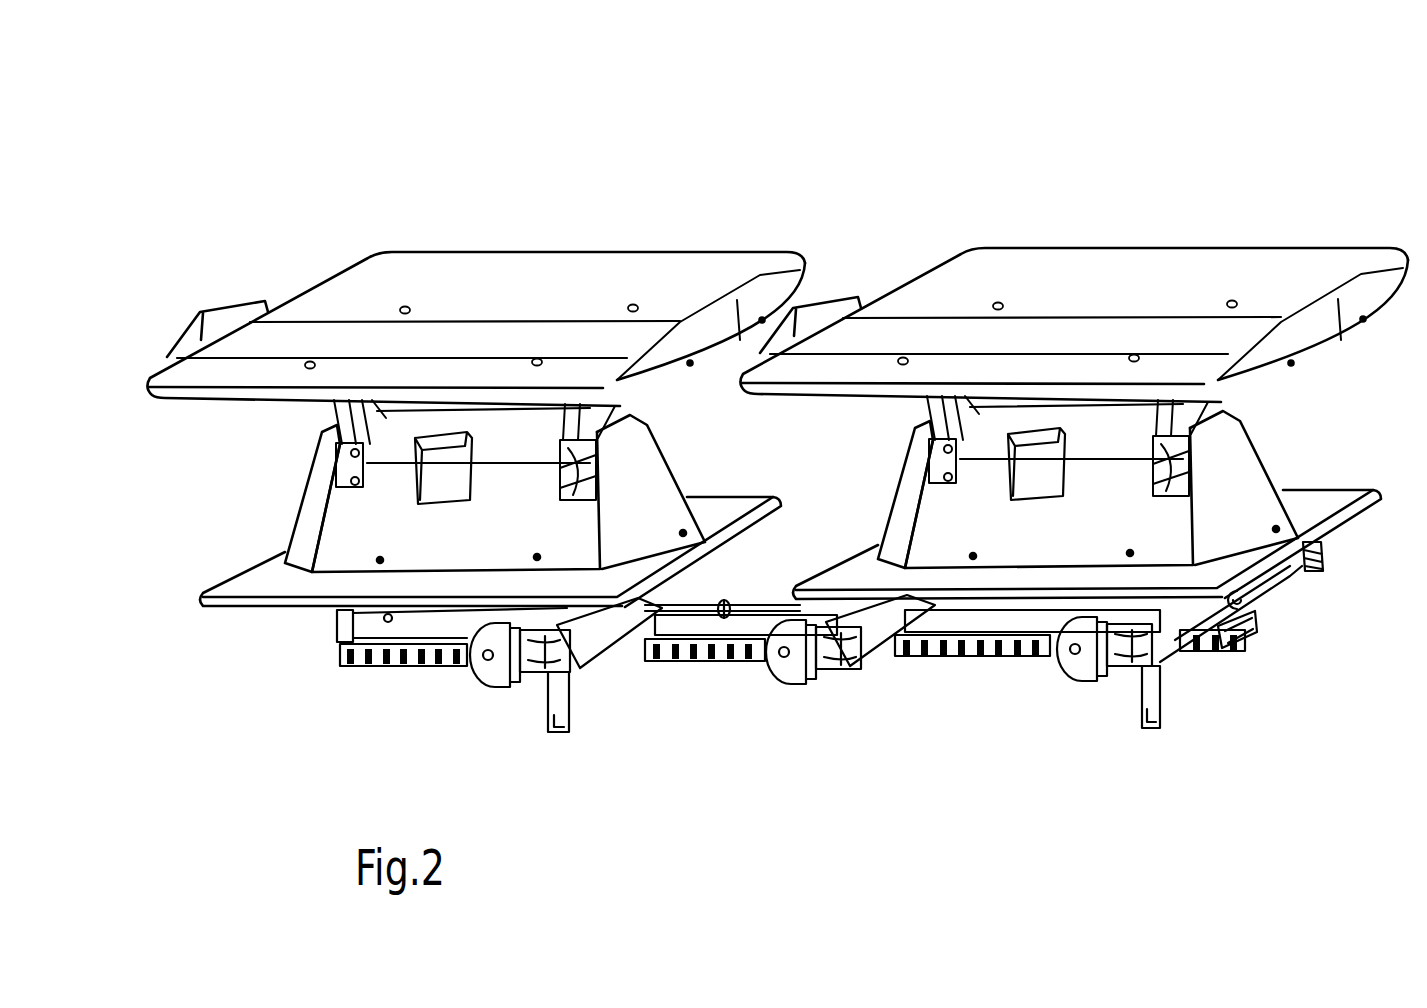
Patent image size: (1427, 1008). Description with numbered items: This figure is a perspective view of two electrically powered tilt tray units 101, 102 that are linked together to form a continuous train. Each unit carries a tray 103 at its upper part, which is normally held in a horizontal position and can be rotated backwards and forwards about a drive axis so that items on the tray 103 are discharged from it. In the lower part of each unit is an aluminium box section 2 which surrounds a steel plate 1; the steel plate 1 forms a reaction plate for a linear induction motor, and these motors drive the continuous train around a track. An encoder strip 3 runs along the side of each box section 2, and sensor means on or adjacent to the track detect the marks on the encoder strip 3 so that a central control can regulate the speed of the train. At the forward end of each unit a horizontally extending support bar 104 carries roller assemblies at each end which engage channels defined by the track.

The tilt tray unit 101 is at (572, 277).
The tilt tray unit 102 is at (1097, 267).
The tray 103 is at (330, 340).
The support bar 104 is at (1277, 580).
The steel plate 1 is at (1257, 634).
The aluminium box section 2 is at (1228, 652).
The encoder strip 3 is at (953, 660).